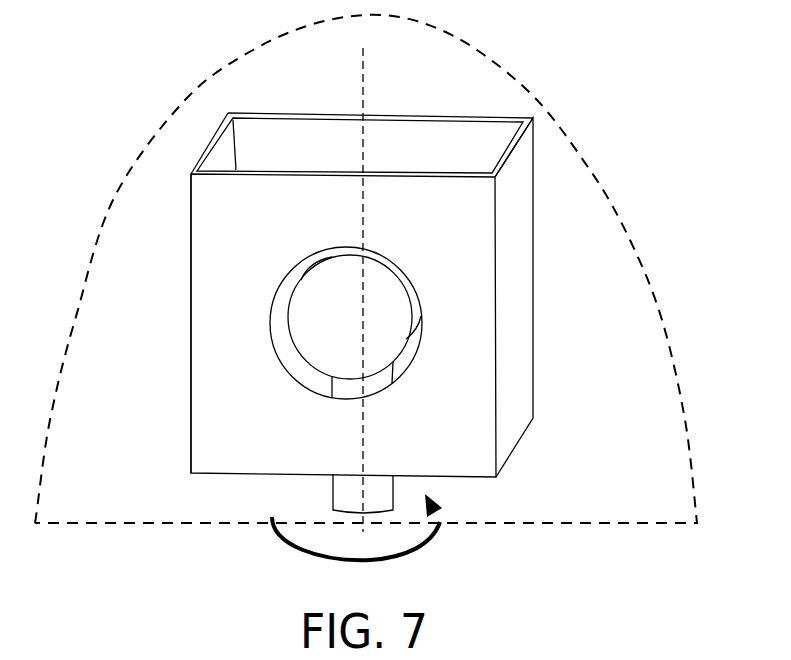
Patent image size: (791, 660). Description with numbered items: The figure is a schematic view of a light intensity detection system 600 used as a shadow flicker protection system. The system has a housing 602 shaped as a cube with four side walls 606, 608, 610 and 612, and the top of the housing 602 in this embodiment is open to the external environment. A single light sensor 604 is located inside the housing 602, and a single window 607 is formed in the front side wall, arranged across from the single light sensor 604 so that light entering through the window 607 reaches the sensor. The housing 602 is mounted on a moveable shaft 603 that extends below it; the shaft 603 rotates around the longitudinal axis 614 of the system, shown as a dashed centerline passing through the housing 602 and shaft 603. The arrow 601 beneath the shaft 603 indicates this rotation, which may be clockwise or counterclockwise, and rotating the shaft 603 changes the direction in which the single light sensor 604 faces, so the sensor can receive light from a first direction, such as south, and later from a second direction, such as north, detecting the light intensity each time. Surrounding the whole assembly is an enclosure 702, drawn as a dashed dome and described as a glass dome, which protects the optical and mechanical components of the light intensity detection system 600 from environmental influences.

The light intensity detection system 600 is at (160, 46).
The arrow 601 is at (417, 548).
The housing 602 is at (461, 437).
The moveable shaft 603 is at (333, 494).
The single light sensor 604 is at (372, 329).
The side wall 606 is at (210, 445).
The single window 607 is at (285, 369).
The side wall 608 is at (172, 200).
The side wall 610 is at (465, 72).
The side wall 612 is at (522, 385).
The longitudinal axis 614 is at (363, 95).
The enclosure 702 is at (630, 243).